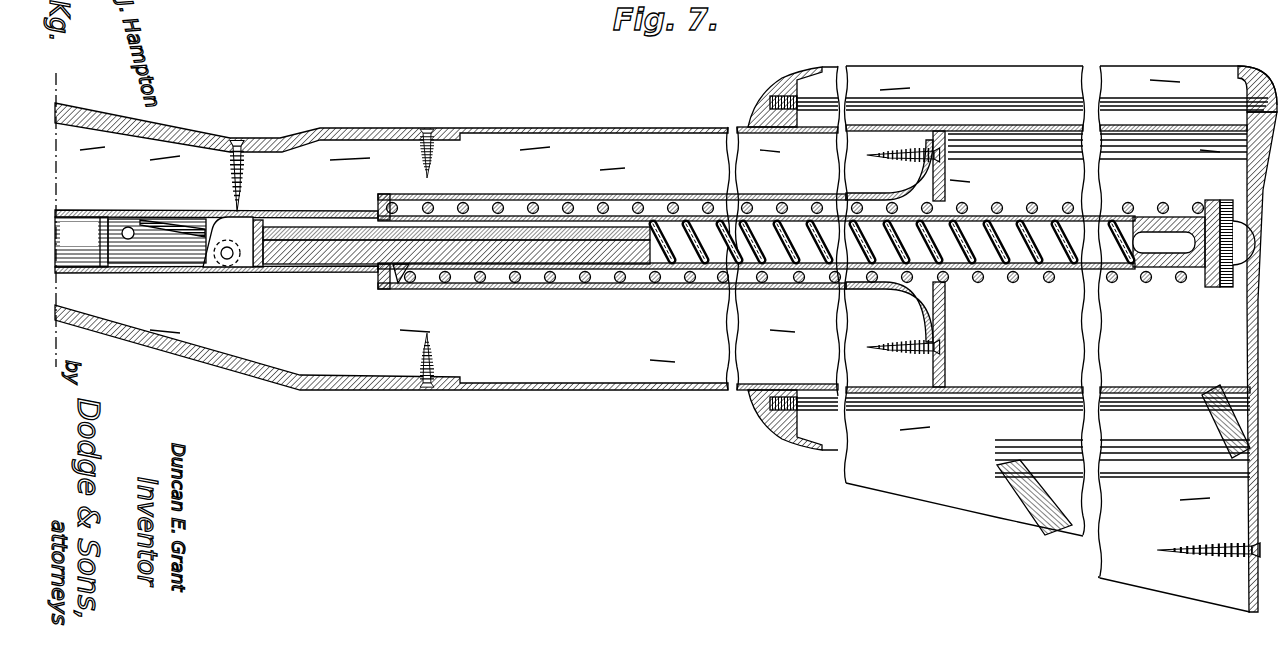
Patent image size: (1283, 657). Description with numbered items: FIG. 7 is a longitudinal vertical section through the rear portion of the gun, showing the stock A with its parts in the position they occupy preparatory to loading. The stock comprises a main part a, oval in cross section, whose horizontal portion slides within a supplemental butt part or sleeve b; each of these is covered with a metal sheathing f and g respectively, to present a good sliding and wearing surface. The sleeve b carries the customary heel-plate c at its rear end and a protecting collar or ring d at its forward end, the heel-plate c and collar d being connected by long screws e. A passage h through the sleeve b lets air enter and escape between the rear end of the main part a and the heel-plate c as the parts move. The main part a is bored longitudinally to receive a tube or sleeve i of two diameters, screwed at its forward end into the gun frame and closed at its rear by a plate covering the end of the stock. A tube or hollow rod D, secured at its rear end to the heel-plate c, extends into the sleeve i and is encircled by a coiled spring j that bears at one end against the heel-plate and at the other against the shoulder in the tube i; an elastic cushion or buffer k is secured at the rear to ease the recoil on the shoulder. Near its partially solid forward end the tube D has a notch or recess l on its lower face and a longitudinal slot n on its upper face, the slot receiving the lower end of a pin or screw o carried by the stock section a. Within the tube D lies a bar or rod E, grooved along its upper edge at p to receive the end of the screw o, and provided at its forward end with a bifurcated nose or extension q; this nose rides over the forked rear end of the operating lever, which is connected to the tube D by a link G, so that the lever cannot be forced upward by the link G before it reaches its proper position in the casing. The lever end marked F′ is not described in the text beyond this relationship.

The stock A is at (1085, 614).
The sheathing f is at (619, 127).
The main part of the stock a is at (650, 290).
The pin or screw o is at (243, 193).
The elastic cushion or buffer k is at (950, 305).
The tube or hollow rod D is at (497, 267).
The longitudinal slot n is at (343, 211).
The tube or sleeve i is at (118, 273).
The coiled spring j is at (497, 203).
The groove p is at (297, 226).
The bar or rod E is at (541, 243).
The notch or recess l is at (398, 264).
The bifurcated nose or extension q is at (263, 273).
The link G is at (185, 228).
The cartridge follower F′ is at (81, 242).
The supplemental butt part or sleeve b is at (1049, 339).
The heel-plate c is at (1257, 339).
The long screws e is at (785, 103).
The protecting collar or ring d is at (800, 82).
The sheathing g is at (1022, 125).
The passage h is at (1045, 490).